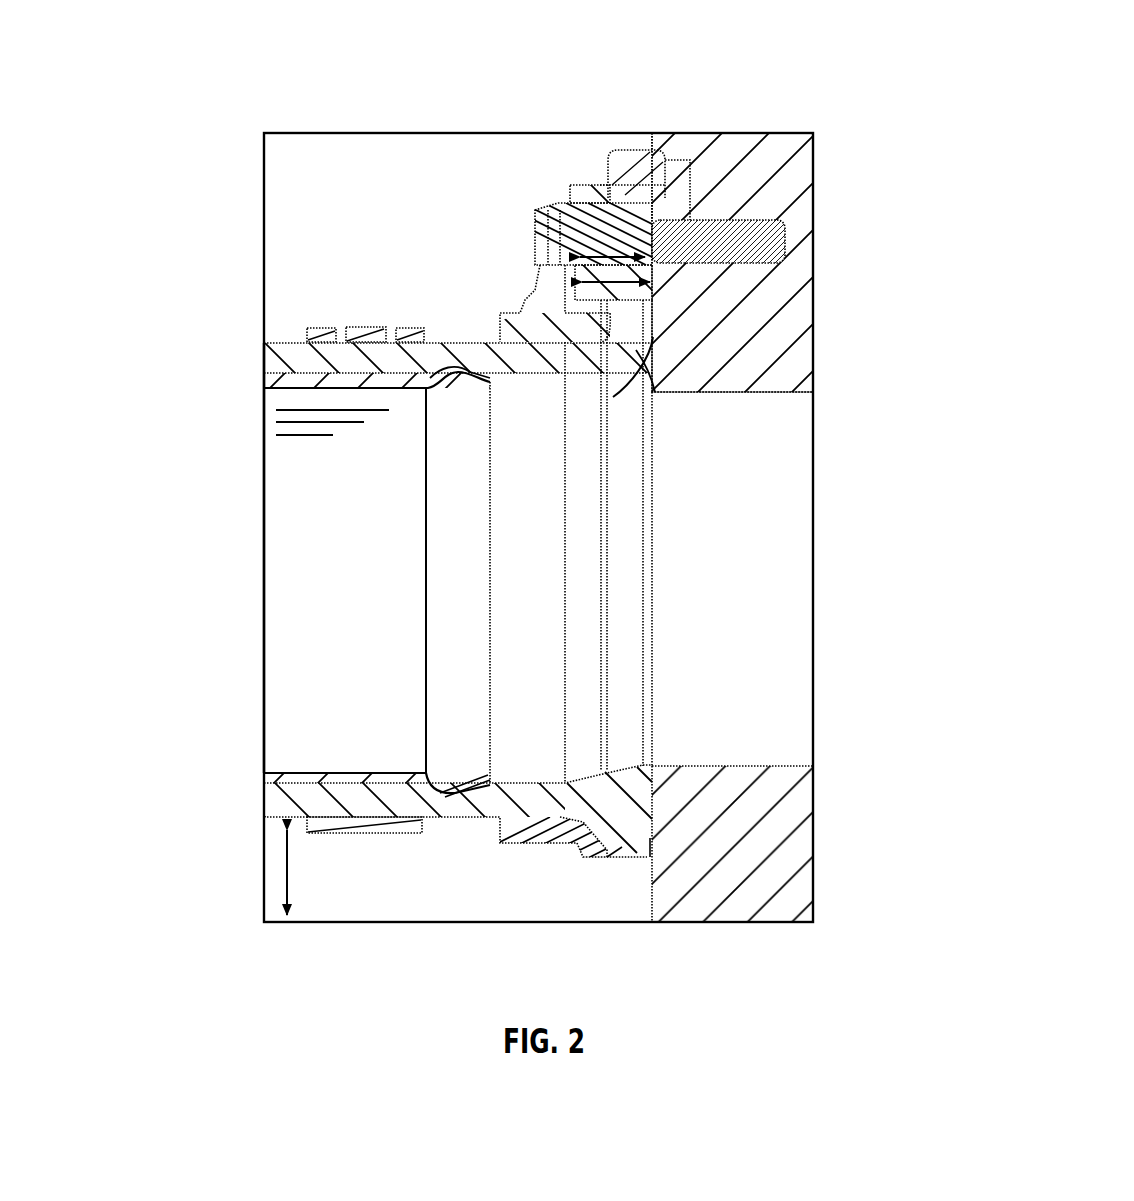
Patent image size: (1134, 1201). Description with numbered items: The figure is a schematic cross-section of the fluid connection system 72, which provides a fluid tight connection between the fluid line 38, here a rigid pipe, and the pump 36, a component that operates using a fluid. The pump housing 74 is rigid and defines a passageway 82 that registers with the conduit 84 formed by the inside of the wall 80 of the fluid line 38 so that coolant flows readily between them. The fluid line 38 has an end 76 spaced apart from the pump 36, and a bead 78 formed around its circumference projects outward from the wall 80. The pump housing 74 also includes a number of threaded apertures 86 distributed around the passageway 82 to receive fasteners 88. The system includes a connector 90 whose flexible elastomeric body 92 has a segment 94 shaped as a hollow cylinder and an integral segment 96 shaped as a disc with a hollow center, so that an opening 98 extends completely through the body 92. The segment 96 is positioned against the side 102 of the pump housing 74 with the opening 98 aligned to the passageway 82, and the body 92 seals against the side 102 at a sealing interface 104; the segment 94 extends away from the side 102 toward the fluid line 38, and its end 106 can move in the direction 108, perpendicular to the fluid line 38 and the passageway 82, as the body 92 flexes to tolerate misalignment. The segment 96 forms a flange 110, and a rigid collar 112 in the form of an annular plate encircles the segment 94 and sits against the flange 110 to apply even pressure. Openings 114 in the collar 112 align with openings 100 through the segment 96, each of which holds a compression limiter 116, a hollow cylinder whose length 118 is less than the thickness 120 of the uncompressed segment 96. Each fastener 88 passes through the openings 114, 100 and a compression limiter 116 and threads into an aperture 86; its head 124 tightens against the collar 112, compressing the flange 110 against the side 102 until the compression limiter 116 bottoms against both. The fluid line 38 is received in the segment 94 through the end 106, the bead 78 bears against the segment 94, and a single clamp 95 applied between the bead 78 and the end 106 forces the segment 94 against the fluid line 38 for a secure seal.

The pump 36 is at (820, 353).
The fluid line 38 is at (263, 488).
The fluid connection system 72 is at (460, 177).
The pump housing 74 is at (737, 922).
The end 76 is at (487, 521).
The bead 78 is at (457, 565).
The wall 80 is at (301, 788).
The passageway 82 is at (777, 392).
The conduit 84 is at (293, 563).
The apertures 86 is at (670, 205).
The fasteners 88 is at (662, 215).
The connector 90 is at (462, 338).
The body 92 is at (435, 808).
The segment 94 is at (293, 341).
The clamp 95 is at (378, 322).
The segment 96 is at (622, 847).
The opening 98 is at (640, 290).
The openings 100 is at (700, 222).
The side 102 is at (565, 368).
The sealing interface 104 is at (650, 857).
The end 106 is at (264, 360).
The direction 108 is at (287, 875).
The flange 110 is at (625, 152).
The collar 112 is at (583, 185).
The openings 114 is at (634, 195).
The compression limiter 116 is at (618, 368).
The length 118 is at (578, 256).
The thickness 120 is at (653, 330).
The head 124 is at (532, 205).